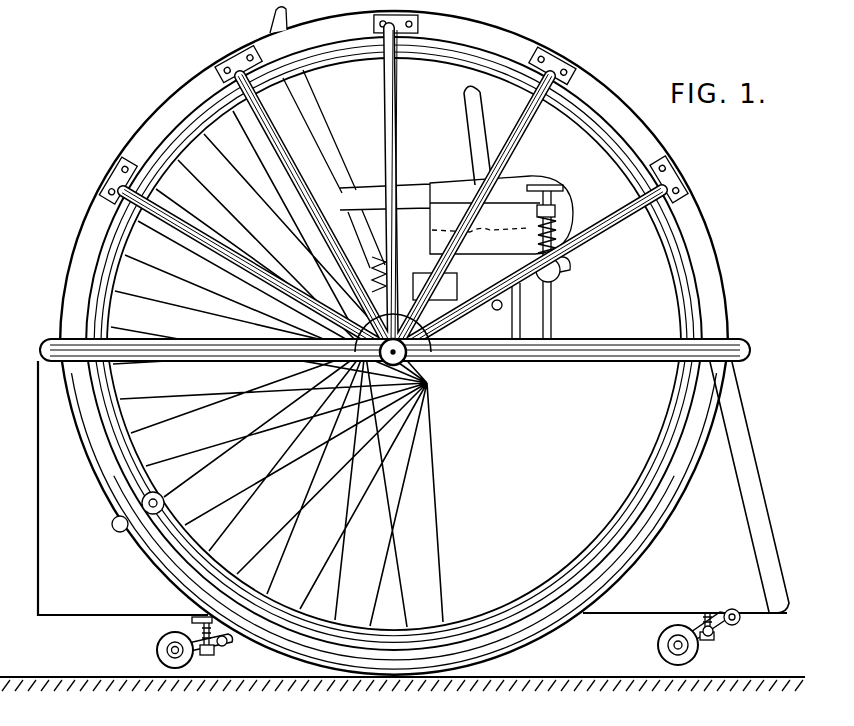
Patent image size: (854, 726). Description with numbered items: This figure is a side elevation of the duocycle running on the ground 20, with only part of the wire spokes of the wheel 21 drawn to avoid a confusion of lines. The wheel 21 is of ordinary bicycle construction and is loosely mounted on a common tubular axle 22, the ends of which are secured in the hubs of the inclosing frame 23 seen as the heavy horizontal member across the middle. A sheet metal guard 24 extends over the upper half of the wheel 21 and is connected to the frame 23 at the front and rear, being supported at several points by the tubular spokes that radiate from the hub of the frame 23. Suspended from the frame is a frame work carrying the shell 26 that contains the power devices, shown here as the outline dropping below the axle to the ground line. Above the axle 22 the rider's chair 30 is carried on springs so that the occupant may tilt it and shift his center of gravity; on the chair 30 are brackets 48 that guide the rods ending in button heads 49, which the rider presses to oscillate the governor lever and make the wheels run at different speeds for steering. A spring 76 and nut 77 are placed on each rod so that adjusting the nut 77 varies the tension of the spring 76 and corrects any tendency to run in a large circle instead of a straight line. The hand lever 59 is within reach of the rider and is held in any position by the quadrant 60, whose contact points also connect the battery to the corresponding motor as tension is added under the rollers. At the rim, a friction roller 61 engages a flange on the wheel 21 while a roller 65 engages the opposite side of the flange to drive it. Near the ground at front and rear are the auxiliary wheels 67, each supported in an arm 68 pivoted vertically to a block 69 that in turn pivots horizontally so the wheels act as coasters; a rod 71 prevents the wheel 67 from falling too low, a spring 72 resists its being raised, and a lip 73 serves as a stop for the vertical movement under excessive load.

The ground 20 is at (80, 671).
The wheel 21 is at (655, 528).
The tubular axle 22 is at (418, 376).
The inclosing frame 23 is at (395, 367).
The sheet metal guard 24 is at (708, 233).
The shell 26 is at (413, 488).
The chair 30 is at (323, 128).
The bracket 48 is at (553, 283).
The button head 49 is at (553, 187).
The hand lever 59 is at (470, 140).
The quadrant 60 is at (567, 267).
The friction roller 61 is at (114, 528).
The roller 65 is at (163, 493).
The auxiliary wheel 67 is at (157, 650).
The arm 68 is at (223, 642).
The block 69 is at (737, 613).
The rod 71 is at (215, 647).
The spring 72 is at (197, 632).
The lip 73 is at (193, 618).
The spring 76 is at (557, 230).
The nut 77 is at (553, 210).